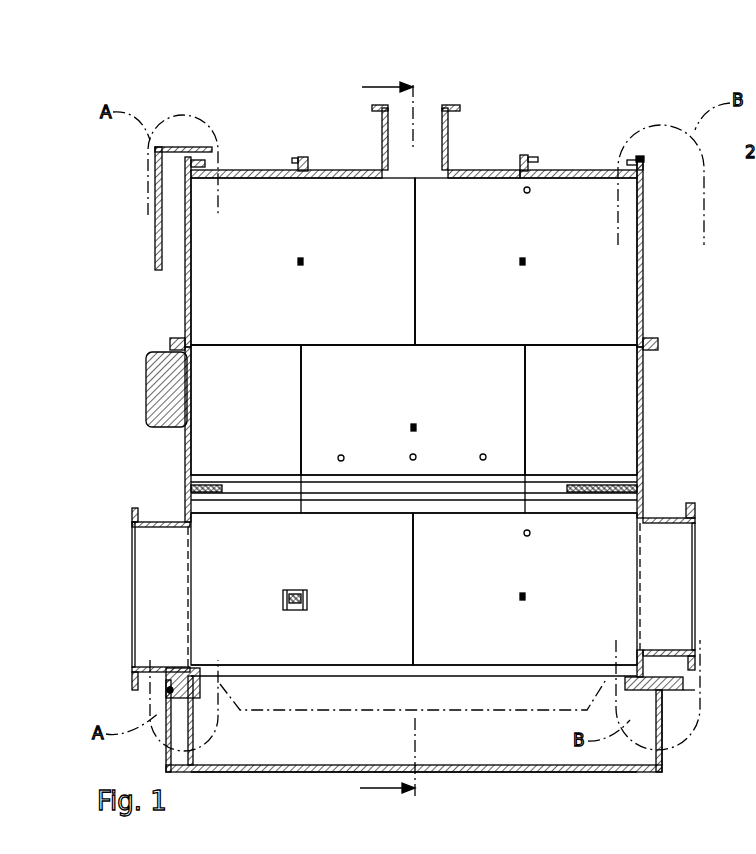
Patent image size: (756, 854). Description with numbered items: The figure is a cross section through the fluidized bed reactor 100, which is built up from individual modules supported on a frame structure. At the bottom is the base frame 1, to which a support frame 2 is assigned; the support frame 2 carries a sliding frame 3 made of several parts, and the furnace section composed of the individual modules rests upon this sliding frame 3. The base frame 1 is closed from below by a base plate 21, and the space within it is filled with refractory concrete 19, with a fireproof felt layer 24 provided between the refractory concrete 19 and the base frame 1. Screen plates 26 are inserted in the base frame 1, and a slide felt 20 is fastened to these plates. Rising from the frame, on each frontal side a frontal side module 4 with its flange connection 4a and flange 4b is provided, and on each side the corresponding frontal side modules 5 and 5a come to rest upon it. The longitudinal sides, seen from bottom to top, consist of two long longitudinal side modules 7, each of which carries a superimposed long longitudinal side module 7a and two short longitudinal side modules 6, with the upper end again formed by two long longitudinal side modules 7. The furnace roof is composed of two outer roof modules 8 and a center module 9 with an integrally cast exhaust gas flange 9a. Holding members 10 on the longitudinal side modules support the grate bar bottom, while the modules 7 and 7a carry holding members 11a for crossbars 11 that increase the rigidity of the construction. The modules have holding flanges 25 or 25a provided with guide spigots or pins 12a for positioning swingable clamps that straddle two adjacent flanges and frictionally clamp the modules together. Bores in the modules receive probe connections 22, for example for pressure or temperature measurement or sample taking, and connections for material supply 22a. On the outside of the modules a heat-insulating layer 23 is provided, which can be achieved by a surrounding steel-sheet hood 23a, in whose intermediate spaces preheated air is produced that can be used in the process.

The base frame 1 is at (188, 757).
The support frame 2 is at (168, 690).
The sliding frame 3 is at (178, 668).
The frontal side module 4 is at (132, 567).
The flange connection 4a is at (695, 514).
The duct flange 4b is at (132, 517).
The frontal side module 5 is at (185, 455).
The frontal side module 5a is at (185, 300).
The short longitudinal side module 6 is at (257, 395).
The long longitudinal side module 7 is at (336, 250).
The long longitudinal side module 7a is at (415, 398).
The outer roof module 8 is at (252, 170).
The center module 9 is at (484, 170).
The exhaust gas flange 9a is at (428, 125).
The partition plate 10 is at (598, 487).
The crossbar 11 is at (298, 262).
The holding member 11a is at (307, 597).
The guide spigot 12a is at (295, 158).
The refractory concrete 19 is at (662, 718).
The slide felt 20 is at (633, 677).
The base plate 21 is at (340, 772).
The probe connection 22 is at (524, 190).
The connection for material supply 22a is at (341, 455).
The heat-insulating layer 23 is at (146, 392).
The steel-sheet hood 23a is at (155, 248).
The fireproof felt layer 24 is at (662, 748).
The holding flange 25 is at (638, 158).
The holding flange 25a is at (644, 162).
The screen plate 26 is at (310, 712).
The fluidized bed reactor 100 is at (665, 280).